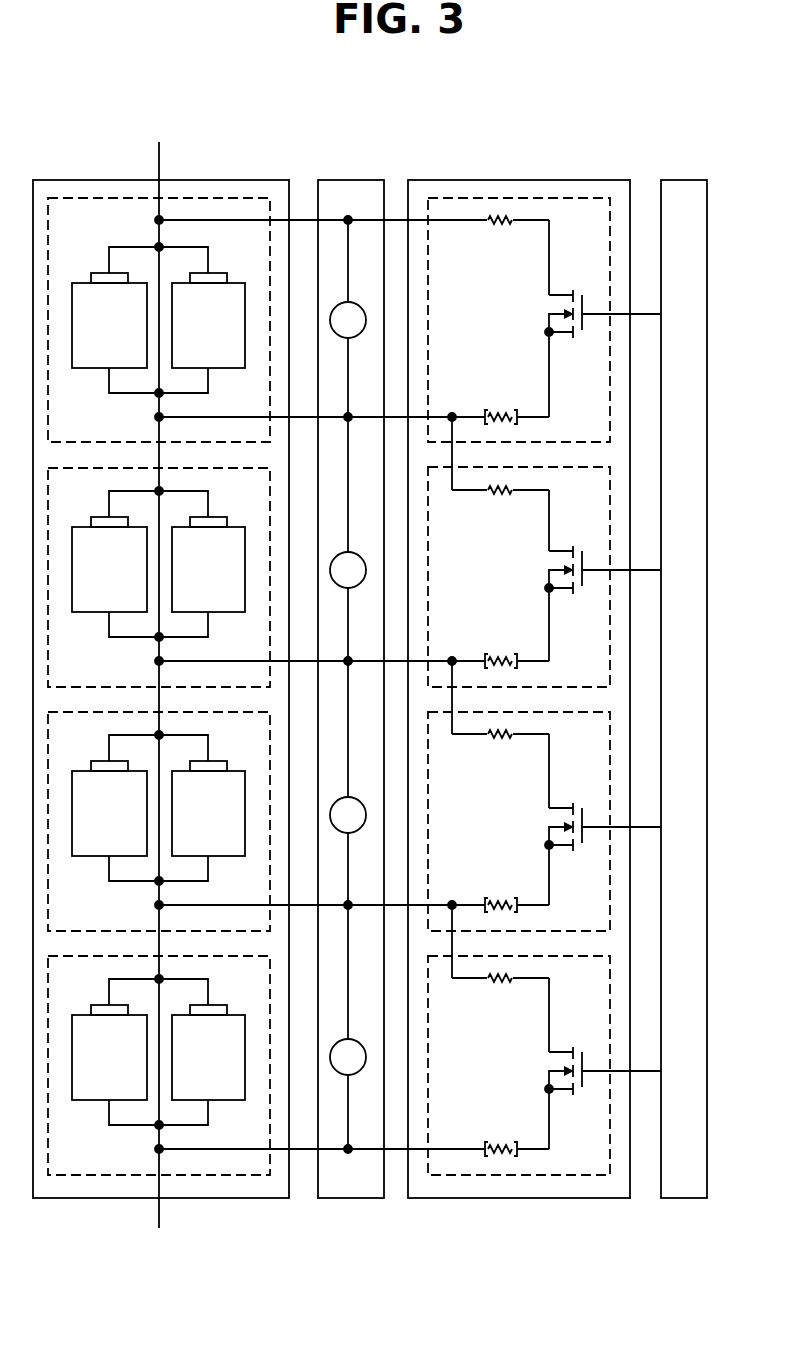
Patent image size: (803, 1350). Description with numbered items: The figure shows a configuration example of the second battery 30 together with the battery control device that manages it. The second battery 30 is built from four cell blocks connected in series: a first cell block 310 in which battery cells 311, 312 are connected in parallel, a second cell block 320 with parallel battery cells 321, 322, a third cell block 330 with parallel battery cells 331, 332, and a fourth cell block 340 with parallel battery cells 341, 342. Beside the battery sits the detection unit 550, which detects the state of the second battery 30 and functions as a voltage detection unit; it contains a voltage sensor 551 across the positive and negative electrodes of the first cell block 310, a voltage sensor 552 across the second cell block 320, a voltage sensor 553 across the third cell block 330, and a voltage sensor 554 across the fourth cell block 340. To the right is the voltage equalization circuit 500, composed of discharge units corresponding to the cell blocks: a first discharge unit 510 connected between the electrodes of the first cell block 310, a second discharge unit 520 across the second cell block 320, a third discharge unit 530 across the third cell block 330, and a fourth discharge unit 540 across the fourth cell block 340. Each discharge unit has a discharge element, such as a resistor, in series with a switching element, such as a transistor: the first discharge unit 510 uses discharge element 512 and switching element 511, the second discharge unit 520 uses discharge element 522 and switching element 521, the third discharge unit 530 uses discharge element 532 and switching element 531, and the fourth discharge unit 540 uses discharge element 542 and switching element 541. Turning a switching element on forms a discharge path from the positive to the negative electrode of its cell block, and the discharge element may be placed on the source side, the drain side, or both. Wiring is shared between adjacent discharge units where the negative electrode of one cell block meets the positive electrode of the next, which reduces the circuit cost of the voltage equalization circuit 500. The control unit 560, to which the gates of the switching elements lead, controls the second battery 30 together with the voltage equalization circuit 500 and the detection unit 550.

The second battery 30 is at (87, 180).
The first cell block 310 is at (105, 425).
The battery cell 311 is at (221, 273).
The battery cell 312 is at (92, 273).
The second cell block 320 is at (105, 669).
The battery cell 321 is at (221, 517).
The battery cell 322 is at (92, 517).
The third cell block 330 is at (105, 913).
The battery cell 331 is at (221, 761).
The battery cell 332 is at (92, 761).
The fourth cell block 340 is at (105, 1157).
The battery cell 341 is at (221, 1005).
The battery cell 342 is at (92, 1005).
The detection unit 550 is at (352, 178).
The voltage sensor 551 is at (360, 306).
The voltage sensor 552 is at (360, 556).
The voltage sensor 553 is at (360, 799).
The voltage sensor 554 is at (360, 1046).
The voltage equalization circuit 500 is at (568, 178).
The first discharge unit 510 is at (600, 241).
The switching element 511 is at (537, 320).
The discharge element 512 is at (500, 235).
The second discharge unit 520 is at (600, 511).
The switching element 521 is at (537, 588).
The discharge element 522 is at (500, 505).
The third discharge unit 530 is at (600, 755).
The switching element 531 is at (537, 831).
The discharge element 532 is at (500, 749).
The fourth discharge unit 540 is at (600, 996).
The switching element 541 is at (537, 1079).
The discharge element 542 is at (500, 993).
The control unit 560 is at (685, 178).